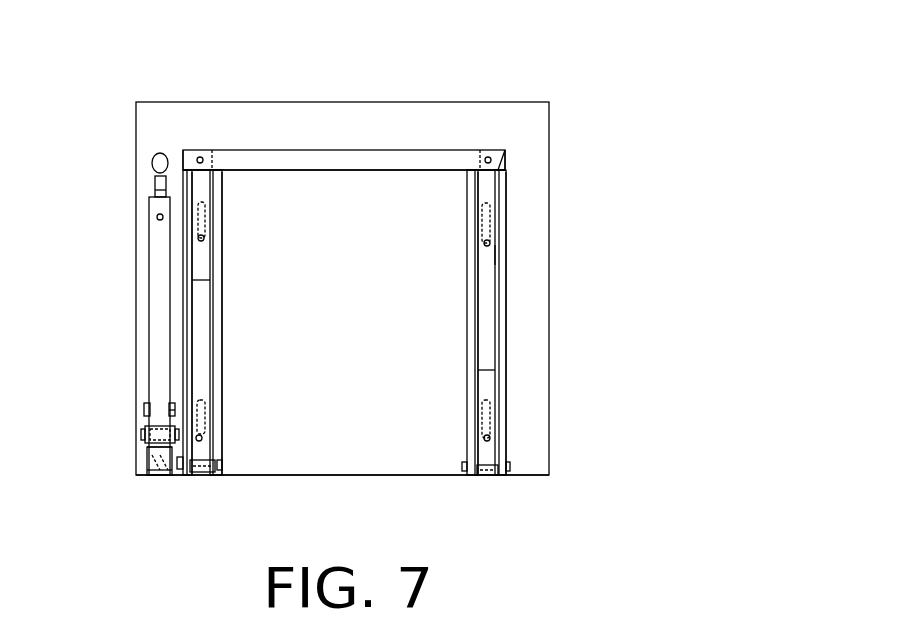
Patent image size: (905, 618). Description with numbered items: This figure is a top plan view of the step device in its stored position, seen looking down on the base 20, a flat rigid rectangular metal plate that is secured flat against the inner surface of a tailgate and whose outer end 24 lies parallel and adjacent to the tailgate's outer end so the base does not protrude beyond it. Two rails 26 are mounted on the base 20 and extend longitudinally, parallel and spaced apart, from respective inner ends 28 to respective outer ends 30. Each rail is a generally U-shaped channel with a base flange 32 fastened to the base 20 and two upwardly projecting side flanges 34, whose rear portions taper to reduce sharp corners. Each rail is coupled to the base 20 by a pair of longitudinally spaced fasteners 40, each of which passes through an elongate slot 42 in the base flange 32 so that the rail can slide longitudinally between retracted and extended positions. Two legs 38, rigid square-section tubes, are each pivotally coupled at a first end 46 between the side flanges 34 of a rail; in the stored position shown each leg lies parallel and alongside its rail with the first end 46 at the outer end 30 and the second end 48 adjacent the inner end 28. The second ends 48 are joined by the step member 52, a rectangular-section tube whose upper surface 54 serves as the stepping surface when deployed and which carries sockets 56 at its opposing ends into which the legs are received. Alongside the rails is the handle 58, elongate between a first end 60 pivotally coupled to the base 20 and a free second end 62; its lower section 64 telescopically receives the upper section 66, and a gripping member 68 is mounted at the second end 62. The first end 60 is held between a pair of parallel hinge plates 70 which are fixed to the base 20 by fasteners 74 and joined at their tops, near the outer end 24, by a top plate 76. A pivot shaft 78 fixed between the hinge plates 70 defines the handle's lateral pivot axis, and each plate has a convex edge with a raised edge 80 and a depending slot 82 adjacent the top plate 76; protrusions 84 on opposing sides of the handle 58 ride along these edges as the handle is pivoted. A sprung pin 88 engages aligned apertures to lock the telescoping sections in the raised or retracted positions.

The base 20 is at (540, 198).
The outer end of the base 24 is at (345, 477).
The rails 26 is at (224, 330).
The inner ends of the rails 28 is at (222, 170).
The outer ends of the rails 30 is at (218, 476).
The base flange 32 is at (501, 254).
The side flanges 34 is at (185, 293).
The legs 38 is at (200, 282).
The fasteners 40 is at (204, 238).
The slot 42 is at (205, 226).
The first end of the leg 46 is at (203, 477).
The second end of the leg 48 is at (193, 158).
The step member 52 is at (365, 158).
The upper surface of the step member 54 is at (375, 171).
The sockets 56 is at (215, 150).
The handle 58 is at (159, 262).
The first end of the handle 60 is at (160, 448).
The second end of the handle 62 is at (155, 180).
The lower section of the handle 64 is at (160, 330).
The upper section of the handle 66 is at (157, 188).
The gripping member 68 is at (152, 160).
The hinge plates 70 is at (172, 405).
The fasteners 74 is at (166, 477).
The top plate 76 is at (156, 477).
The pivot shaft 78 is at (144, 436).
The raised edge 80 is at (143, 428).
The depending slot 82 is at (150, 452).
The protrusions 84 is at (176, 412).
The sprung pin 88 is at (158, 218).